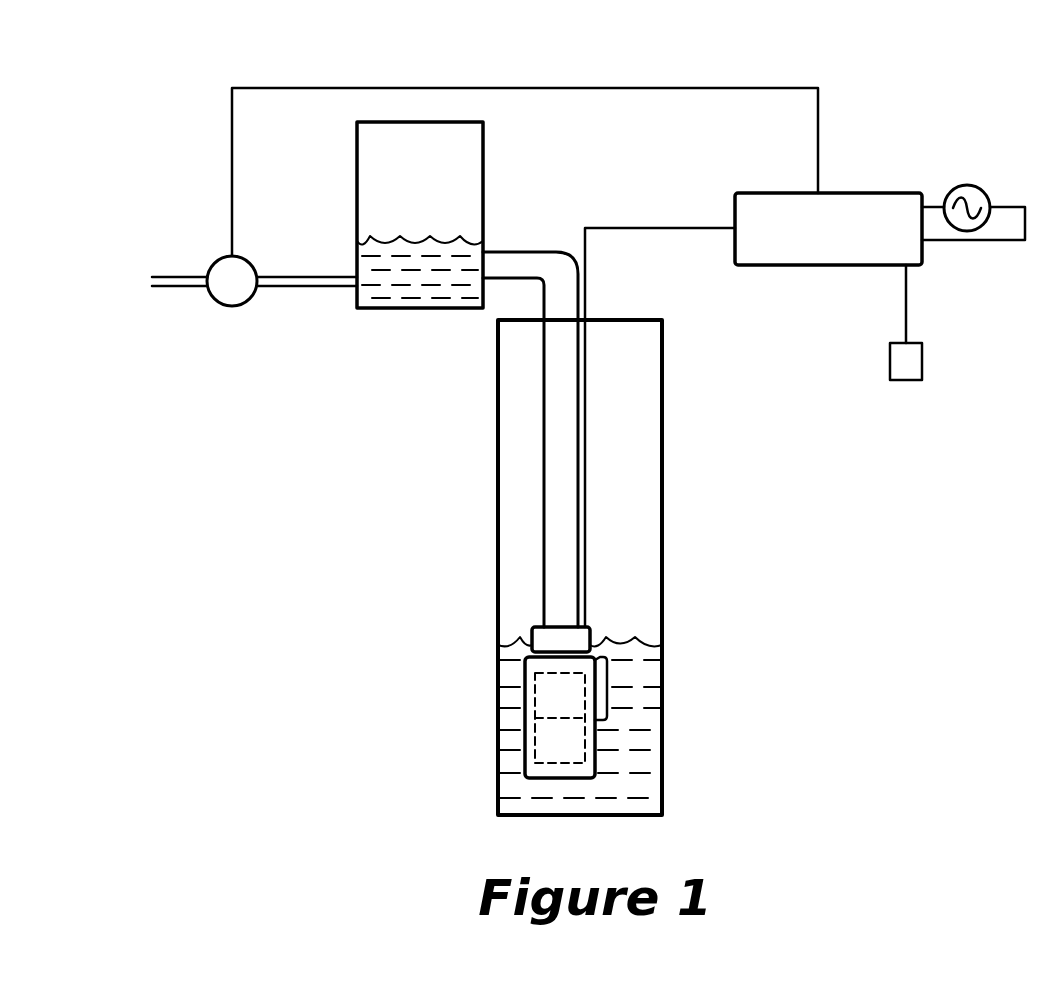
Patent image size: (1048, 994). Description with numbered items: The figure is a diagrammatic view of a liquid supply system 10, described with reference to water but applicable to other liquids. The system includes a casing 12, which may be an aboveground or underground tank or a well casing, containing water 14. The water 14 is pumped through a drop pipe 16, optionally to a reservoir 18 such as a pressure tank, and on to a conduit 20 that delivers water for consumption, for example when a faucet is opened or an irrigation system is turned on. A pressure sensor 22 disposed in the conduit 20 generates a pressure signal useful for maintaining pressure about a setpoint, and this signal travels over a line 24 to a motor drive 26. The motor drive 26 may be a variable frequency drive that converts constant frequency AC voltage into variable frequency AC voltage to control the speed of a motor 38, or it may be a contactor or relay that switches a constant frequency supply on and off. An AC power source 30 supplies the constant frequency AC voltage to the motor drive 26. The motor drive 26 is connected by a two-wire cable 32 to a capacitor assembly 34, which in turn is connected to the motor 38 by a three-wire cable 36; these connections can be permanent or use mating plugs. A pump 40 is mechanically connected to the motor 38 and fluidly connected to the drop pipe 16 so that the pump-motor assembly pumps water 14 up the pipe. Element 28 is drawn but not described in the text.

The liquid supply system 10 is at (140, 68).
The casing 12 is at (498, 562).
The water 14 is at (500, 645).
The drop pipe 16 is at (545, 440).
The reservoir 18 is at (432, 308).
The conduit 20 is at (165, 287).
The pressure sensor 22 is at (227, 306).
The line 24 is at (232, 140).
The motor drive 26 is at (855, 193).
The sensor 28 is at (905, 381).
The AC power source 30 is at (975, 188).
The cable 32 is at (688, 228).
The capacitor assembly 34 is at (590, 633).
The cable 36 is at (607, 700).
The motor 38 is at (535, 745).
The pump 40 is at (525, 690).